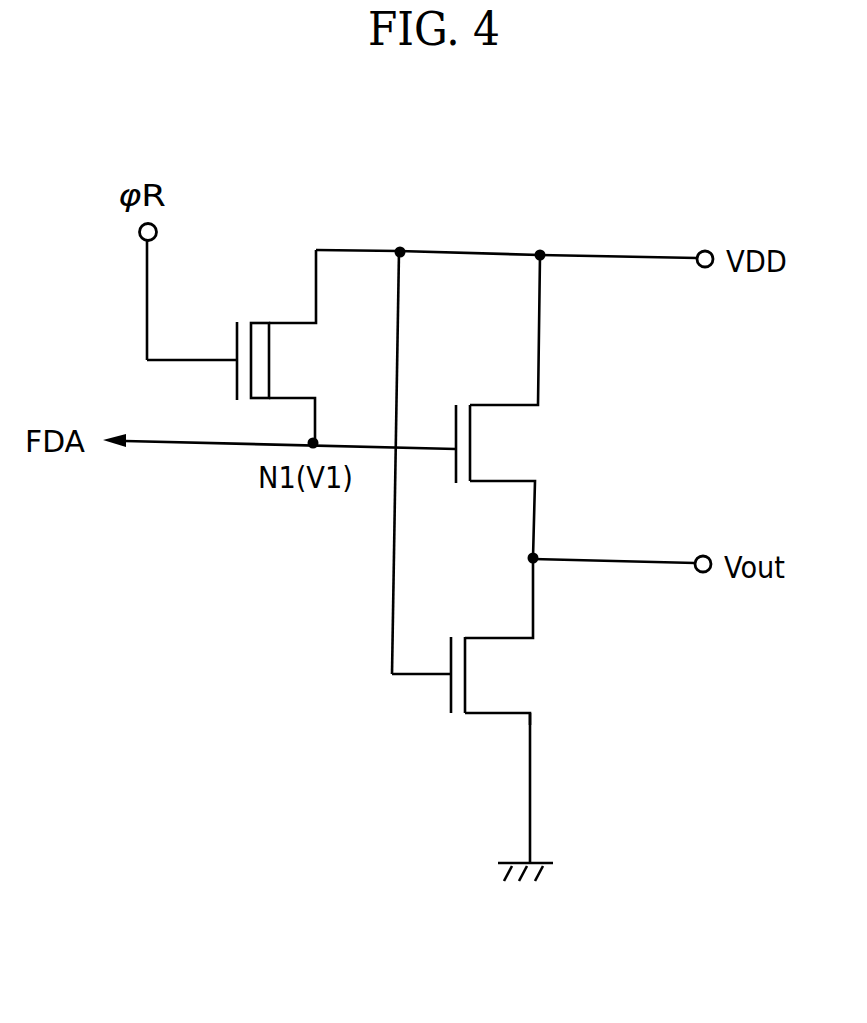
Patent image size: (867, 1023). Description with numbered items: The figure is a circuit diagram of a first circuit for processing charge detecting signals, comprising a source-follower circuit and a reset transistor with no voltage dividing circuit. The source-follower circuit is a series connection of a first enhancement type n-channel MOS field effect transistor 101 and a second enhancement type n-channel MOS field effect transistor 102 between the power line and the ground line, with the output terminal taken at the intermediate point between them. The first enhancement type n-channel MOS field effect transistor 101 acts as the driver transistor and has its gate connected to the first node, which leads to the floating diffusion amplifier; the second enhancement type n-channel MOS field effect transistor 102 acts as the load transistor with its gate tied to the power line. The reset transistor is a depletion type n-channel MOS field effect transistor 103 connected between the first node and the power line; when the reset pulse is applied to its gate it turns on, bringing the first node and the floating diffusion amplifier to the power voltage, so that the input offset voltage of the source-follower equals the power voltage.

The first enhancement type n-channel MOS field effect transistor 101 is at (525, 406).
The second enhancement type n-channel MOS field effect transistor 102 is at (491, 641).
The depletion type n-channel MOS field effect transistor 103 is at (296, 346).